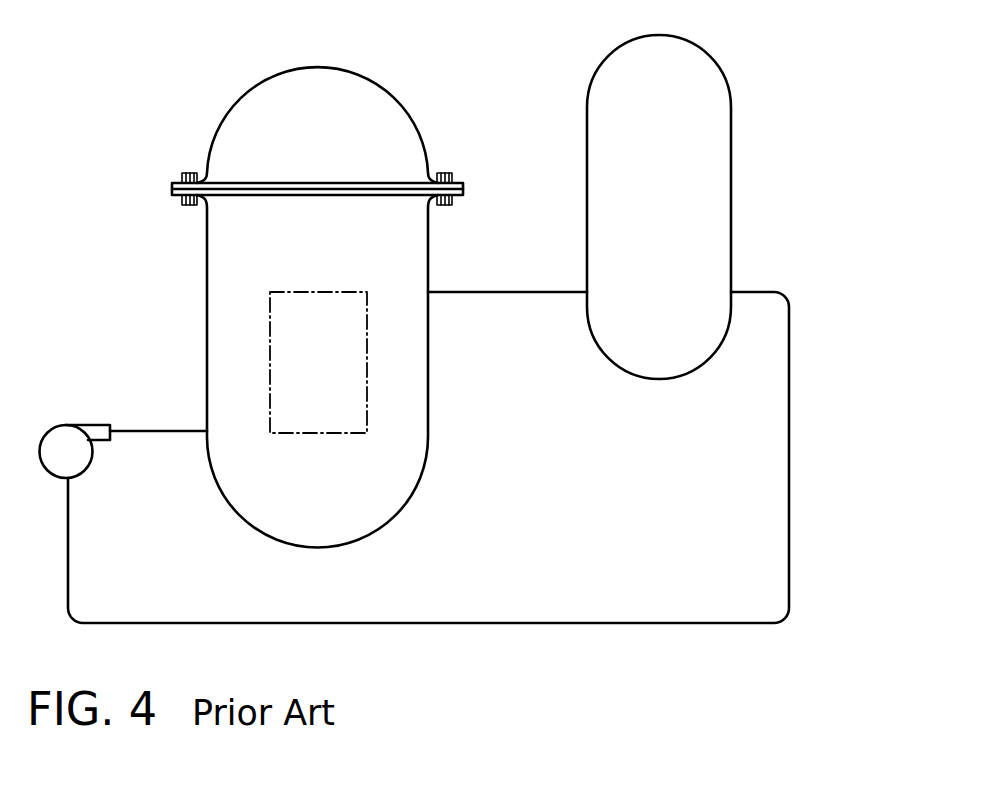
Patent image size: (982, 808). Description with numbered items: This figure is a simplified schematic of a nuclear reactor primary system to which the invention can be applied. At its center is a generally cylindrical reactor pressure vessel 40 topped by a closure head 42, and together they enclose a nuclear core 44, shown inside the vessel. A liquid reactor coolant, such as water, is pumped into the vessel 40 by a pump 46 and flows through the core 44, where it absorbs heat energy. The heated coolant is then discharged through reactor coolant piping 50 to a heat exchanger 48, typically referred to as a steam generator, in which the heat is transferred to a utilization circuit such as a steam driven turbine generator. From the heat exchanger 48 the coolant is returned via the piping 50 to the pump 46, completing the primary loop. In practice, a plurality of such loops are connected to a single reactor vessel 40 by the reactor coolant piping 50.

The reactor pressure vessel 40 is at (322, 305).
The closure head 42 is at (220, 130).
The nuclear core 44 is at (270, 350).
The pump 46 is at (63, 424).
The heat exchanger 48 is at (731, 142).
The reactor coolant piping 50 is at (789, 552).